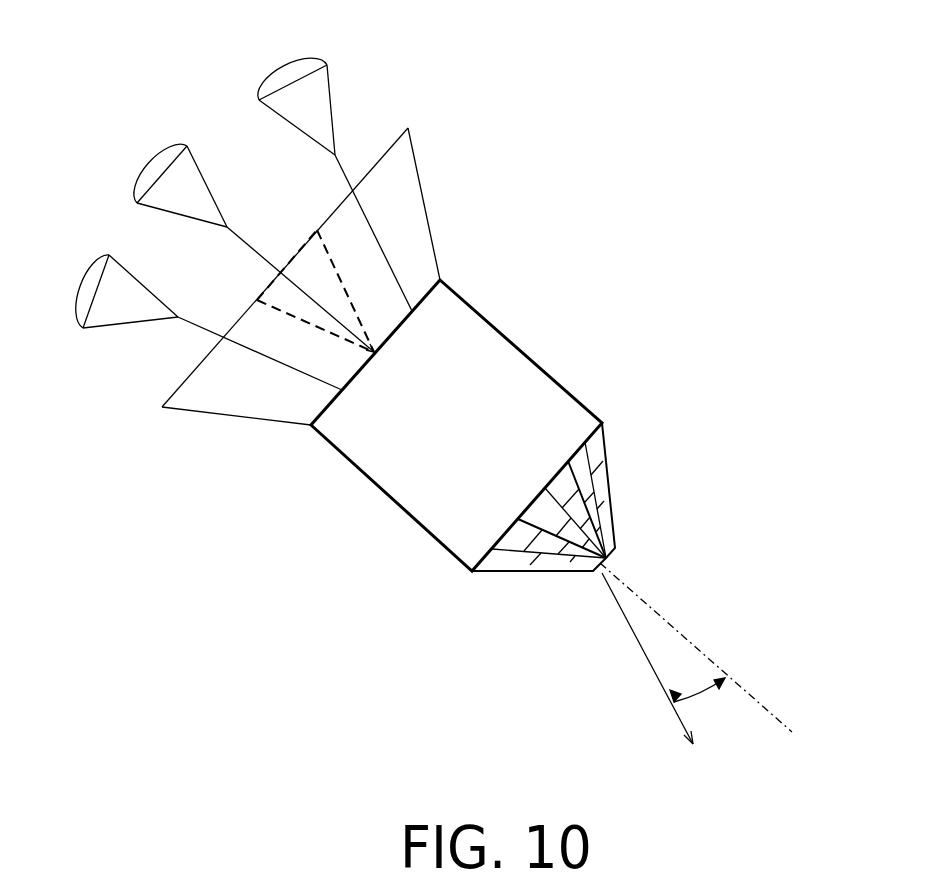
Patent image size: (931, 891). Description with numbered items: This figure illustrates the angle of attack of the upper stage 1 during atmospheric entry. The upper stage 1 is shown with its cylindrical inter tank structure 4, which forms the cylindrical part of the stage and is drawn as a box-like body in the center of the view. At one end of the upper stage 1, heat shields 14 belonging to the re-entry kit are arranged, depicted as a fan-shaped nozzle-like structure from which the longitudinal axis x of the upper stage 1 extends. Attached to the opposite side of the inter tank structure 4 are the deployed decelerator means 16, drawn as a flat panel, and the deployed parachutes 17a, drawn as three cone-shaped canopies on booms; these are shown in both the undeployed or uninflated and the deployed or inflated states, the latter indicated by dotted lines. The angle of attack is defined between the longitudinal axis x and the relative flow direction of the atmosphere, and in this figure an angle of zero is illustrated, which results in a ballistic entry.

The upper stage 1 is at (102, 78).
The deployed parachutes 17a is at (313, 83).
The decelerator 16 is at (378, 198).
The cylindrical inter tank structure 4 is at (410, 395).
The heat shields 14 is at (590, 492).
The nozzle axis x is at (652, 610).